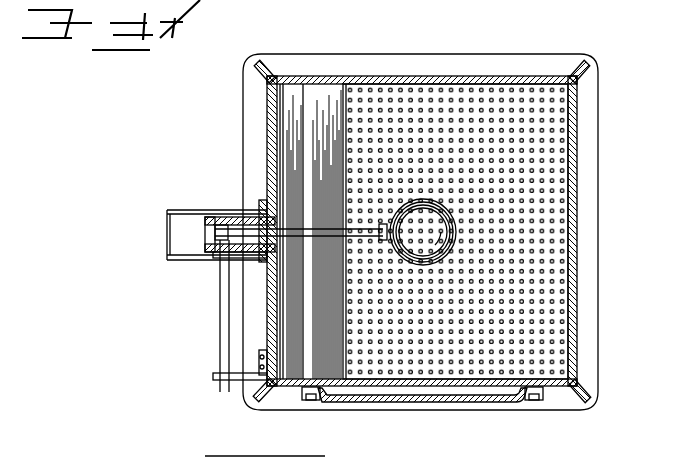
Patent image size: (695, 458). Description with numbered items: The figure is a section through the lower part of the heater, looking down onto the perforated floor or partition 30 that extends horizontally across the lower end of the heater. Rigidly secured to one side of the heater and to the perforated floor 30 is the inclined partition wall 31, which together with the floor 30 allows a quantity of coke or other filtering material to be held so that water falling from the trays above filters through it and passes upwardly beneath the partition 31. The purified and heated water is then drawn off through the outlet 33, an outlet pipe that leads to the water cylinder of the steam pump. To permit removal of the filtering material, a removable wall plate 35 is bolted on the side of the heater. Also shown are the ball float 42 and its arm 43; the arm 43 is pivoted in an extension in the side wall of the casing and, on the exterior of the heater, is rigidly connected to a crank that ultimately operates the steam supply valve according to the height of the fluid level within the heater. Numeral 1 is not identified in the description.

The housing casing 1 is at (288, 396).
The perforated floor 30 is at (546, 346).
The inclined partition wall 31 is at (314, 231).
The outlet 33 is at (221, 301).
The removable wall plate 35 is at (476, 398).
The ball float 42 is at (423, 232).
The arm 43 is at (311, 232).